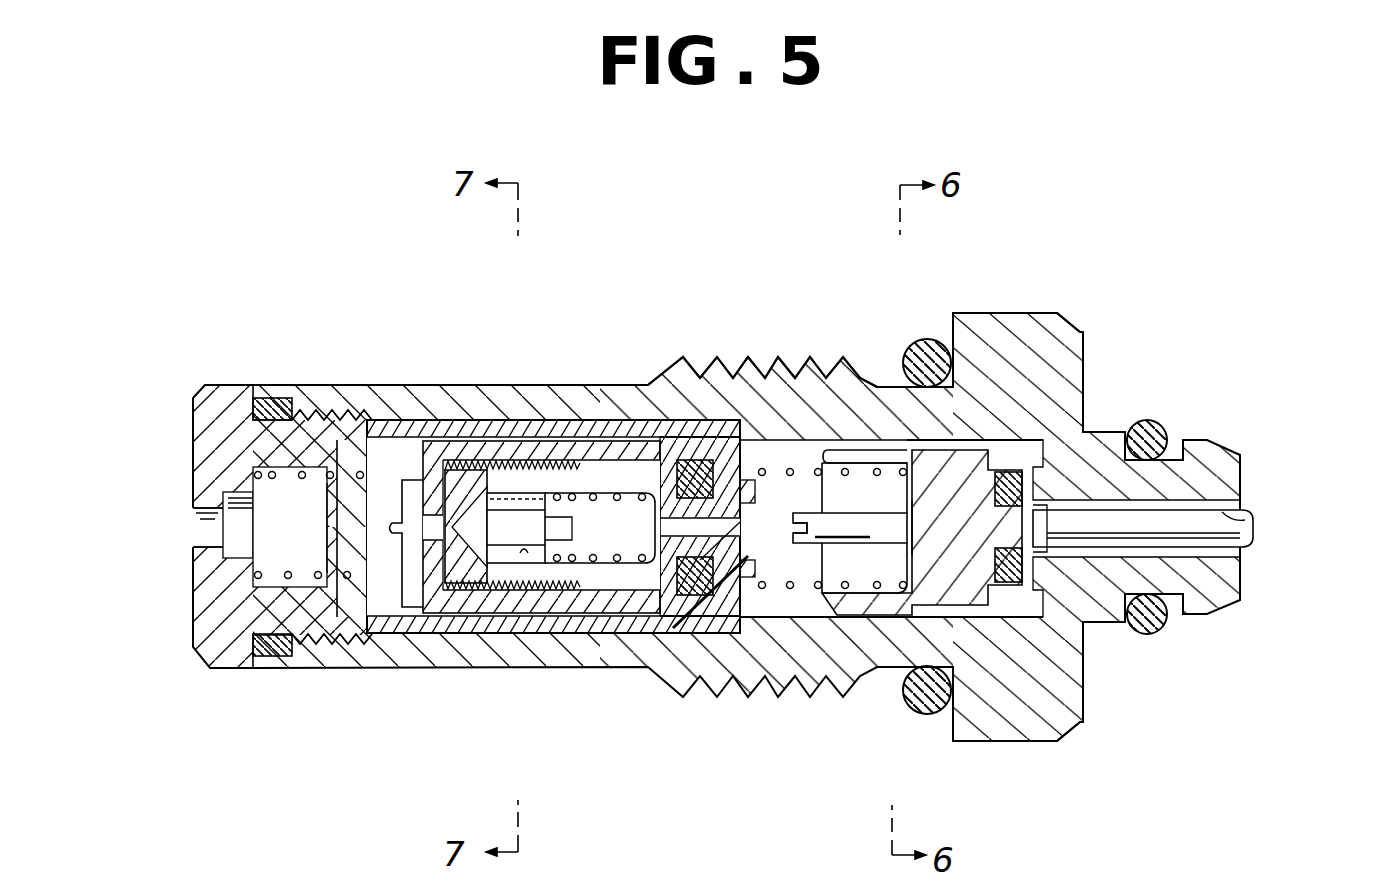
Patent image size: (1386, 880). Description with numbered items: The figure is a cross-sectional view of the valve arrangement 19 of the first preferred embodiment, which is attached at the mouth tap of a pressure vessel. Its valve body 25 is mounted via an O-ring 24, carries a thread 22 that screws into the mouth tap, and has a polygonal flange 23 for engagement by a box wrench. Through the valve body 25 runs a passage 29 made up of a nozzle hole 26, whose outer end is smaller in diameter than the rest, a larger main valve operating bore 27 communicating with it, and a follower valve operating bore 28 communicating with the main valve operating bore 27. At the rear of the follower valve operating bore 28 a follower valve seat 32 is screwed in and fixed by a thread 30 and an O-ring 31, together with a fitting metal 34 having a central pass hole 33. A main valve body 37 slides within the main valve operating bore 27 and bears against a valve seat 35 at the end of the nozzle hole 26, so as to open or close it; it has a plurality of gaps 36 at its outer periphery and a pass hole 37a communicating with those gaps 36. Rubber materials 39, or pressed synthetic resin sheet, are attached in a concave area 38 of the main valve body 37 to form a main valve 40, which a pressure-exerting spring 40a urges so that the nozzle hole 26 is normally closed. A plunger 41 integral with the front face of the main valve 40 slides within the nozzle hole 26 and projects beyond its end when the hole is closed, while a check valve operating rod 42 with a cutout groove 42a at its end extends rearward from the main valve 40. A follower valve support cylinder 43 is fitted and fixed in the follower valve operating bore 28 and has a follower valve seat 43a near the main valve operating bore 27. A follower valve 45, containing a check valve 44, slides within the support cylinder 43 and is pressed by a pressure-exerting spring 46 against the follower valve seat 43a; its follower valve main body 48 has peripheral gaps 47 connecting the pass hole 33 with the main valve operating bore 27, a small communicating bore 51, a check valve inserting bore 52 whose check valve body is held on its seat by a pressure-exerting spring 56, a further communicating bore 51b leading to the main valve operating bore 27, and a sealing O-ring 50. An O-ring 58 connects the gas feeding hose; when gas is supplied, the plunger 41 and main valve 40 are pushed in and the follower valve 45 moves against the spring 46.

The valve arrangement 19 is at (1192, 202).
The thread 22 is at (706, 370).
The polygonal flange 23 is at (1025, 313).
The O-ring 24 is at (922, 714).
The valve body 25 is at (578, 668).
The nozzle hole 26 is at (1235, 518).
The main valve operating bore 27 is at (886, 392).
The follower valve operating bore 28 is at (628, 422).
The passage 29 is at (803, 620).
The thread 30 is at (316, 410).
The O-ring 31 is at (268, 400).
The follower valve seat 32 is at (337, 637).
The pass hole 33 is at (198, 517).
The fitting metal 34 is at (192, 636).
The valve seat 35 is at (1022, 470).
The gap 36 is at (980, 440).
The main valve body 37 is at (968, 614).
The pass hole 37a is at (907, 548).
The concave area 38 is at (1085, 698).
The rubber materials 39 is at (1083, 653).
The main valve 40 is at (901, 617).
The pressure-exerting spring 40a is at (762, 445).
The plunger 41 is at (1253, 536).
The check valve operating rod 42 is at (858, 512).
The cutout groove 42a is at (776, 522).
The follower valve support cylinder 43 is at (430, 615).
The follower valve seat 43a is at (718, 680).
The check valve 44 is at (490, 585).
The follower valve 45 is at (500, 458).
The pressure-exerting spring 46 is at (389, 471).
The gap 47 is at (470, 446).
The follower valve main body 48 is at (573, 430).
The O-ring 50 is at (690, 640).
The communicating bore 51 is at (388, 610).
The communicating bore 51b is at (768, 620).
The check valve inserting bore 52 is at (524, 560).
The pressure-exerting spring 56 is at (620, 600).
The O-ring 58 is at (1153, 432).